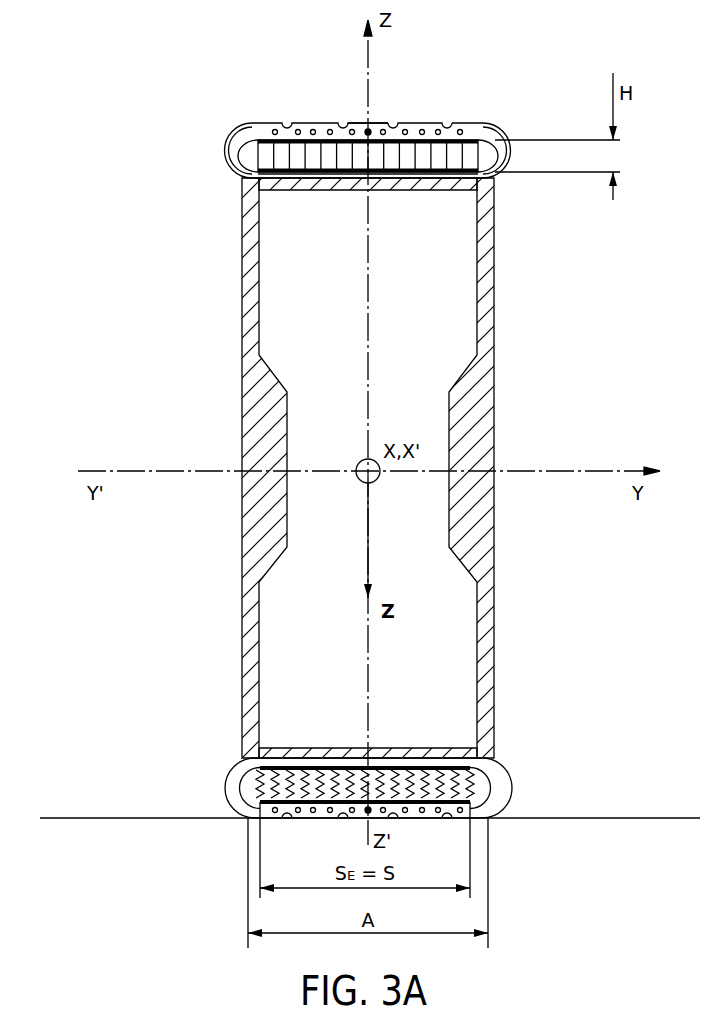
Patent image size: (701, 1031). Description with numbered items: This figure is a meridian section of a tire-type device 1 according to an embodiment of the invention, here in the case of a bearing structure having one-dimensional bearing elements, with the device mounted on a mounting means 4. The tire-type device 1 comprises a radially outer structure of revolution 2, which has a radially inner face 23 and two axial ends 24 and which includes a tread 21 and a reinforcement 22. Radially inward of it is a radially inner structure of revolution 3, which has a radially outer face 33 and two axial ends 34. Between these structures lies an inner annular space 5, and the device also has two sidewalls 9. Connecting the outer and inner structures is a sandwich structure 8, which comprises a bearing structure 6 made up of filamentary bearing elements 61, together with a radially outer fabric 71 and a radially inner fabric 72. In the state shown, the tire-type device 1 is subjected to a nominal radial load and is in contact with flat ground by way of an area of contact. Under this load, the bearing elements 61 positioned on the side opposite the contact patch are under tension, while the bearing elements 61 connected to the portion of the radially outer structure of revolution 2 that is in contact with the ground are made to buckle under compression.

The tire-type device 1 is at (232, 121).
The radially outer structure of revolution 2 is at (312, 121).
The tread 21 is at (384, 126).
The reinforcement 22 is at (426, 127).
The radially inner face 23 is at (476, 127).
The axial ends 24 is at (253, 137).
The sidewalls 9 is at (228, 149).
The inner annular space 5 is at (251, 158).
The axial ends 34 is at (243, 181).
The radially inner structure of revolution 3 is at (322, 180).
The radially outer face 33 is at (377, 181).
The mounting means 4 is at (241, 341).
The bearing structure 6 is at (478, 166).
The filamentary bearing elements 61 is at (385, 163).
The radially outer fabric 71 is at (478, 147).
The radially inner fabric 72 is at (483, 178).
The sandwich structure 8 is at (612, 213).